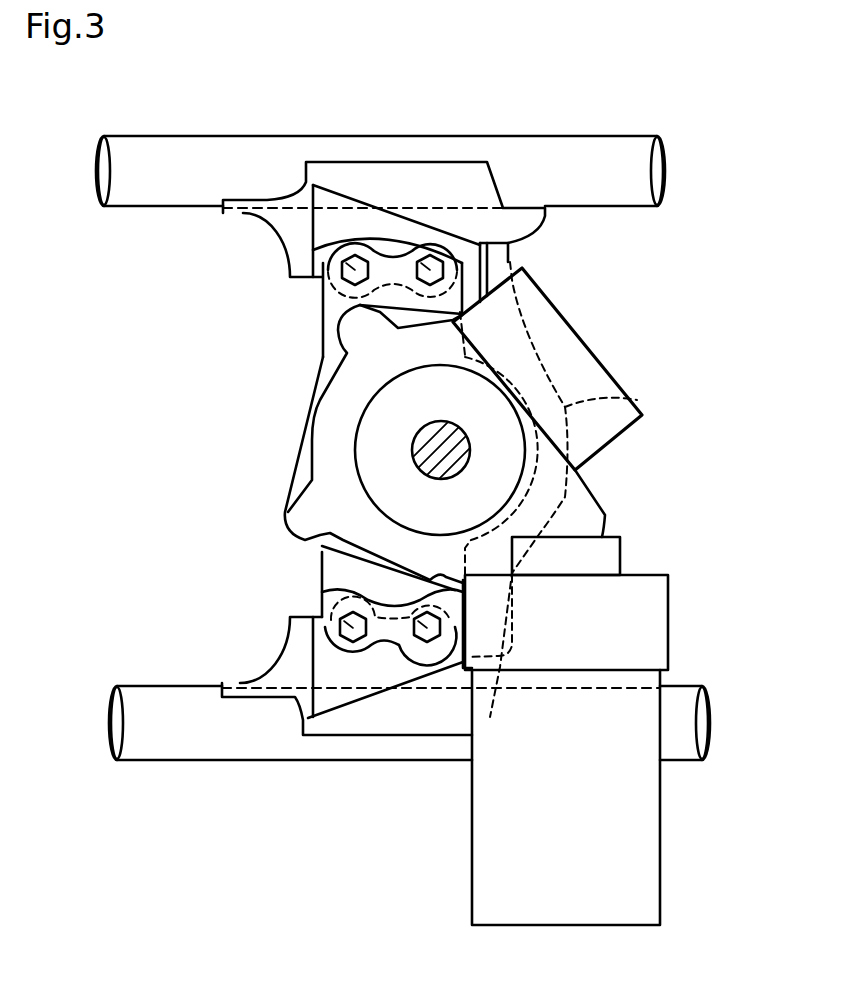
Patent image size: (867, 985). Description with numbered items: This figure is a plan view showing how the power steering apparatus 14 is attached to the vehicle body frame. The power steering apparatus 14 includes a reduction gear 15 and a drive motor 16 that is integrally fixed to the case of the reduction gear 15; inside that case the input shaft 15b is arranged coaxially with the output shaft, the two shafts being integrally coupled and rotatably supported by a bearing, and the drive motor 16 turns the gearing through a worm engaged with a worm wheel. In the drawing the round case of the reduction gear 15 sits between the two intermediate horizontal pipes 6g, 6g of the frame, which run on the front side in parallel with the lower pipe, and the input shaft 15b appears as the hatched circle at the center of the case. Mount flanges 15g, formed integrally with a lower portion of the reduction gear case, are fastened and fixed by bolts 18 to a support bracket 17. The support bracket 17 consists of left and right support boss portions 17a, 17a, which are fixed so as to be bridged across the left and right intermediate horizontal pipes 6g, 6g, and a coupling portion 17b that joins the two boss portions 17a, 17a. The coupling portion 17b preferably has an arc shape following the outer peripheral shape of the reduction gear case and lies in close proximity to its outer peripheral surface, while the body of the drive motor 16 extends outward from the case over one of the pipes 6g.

The intermediate horizontal pipe 6g is at (212, 136).
The power steering apparatus 14 is at (248, 506).
The reduction gear 15 is at (314, 410).
The input shaft 15b is at (462, 450).
The mount flange 15g is at (323, 315).
The drive motor 16 is at (662, 836).
The support bracket 17 is at (413, 162).
The support boss portion 17a is at (490, 254).
The coupling portion 17b is at (640, 400).
The bolt 18 is at (421, 263).